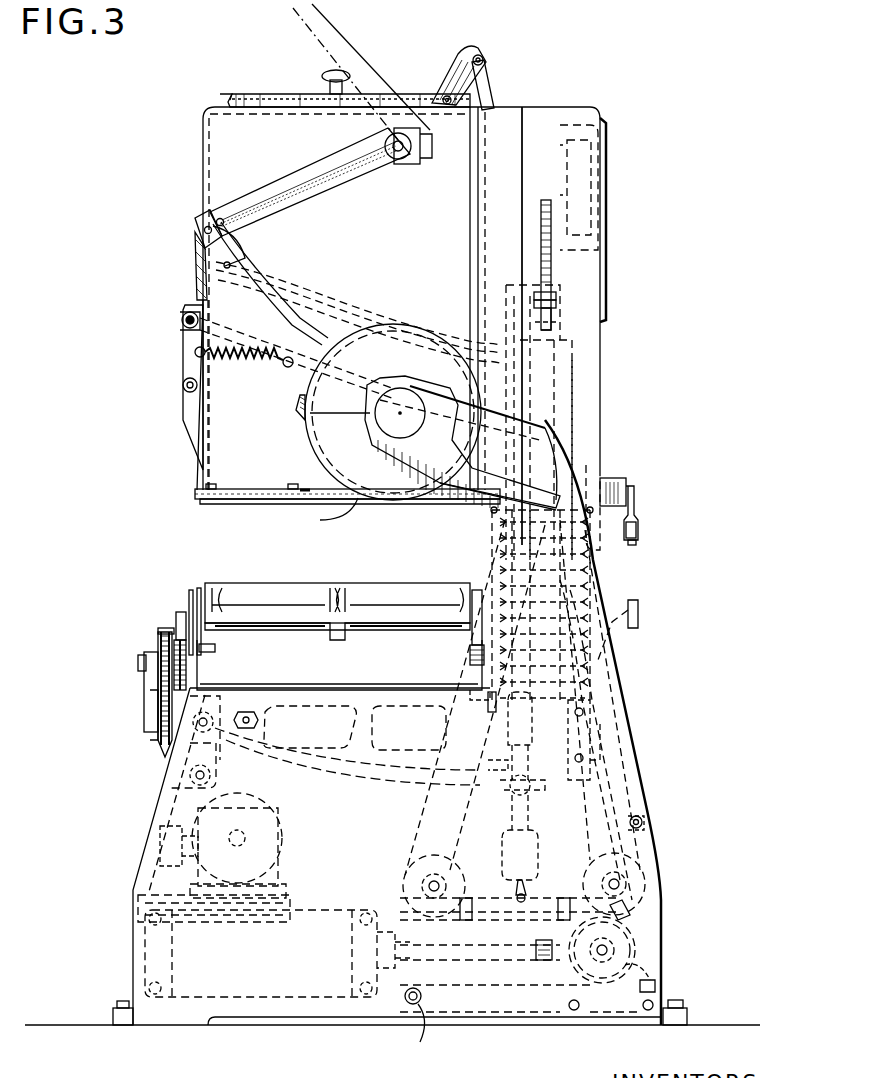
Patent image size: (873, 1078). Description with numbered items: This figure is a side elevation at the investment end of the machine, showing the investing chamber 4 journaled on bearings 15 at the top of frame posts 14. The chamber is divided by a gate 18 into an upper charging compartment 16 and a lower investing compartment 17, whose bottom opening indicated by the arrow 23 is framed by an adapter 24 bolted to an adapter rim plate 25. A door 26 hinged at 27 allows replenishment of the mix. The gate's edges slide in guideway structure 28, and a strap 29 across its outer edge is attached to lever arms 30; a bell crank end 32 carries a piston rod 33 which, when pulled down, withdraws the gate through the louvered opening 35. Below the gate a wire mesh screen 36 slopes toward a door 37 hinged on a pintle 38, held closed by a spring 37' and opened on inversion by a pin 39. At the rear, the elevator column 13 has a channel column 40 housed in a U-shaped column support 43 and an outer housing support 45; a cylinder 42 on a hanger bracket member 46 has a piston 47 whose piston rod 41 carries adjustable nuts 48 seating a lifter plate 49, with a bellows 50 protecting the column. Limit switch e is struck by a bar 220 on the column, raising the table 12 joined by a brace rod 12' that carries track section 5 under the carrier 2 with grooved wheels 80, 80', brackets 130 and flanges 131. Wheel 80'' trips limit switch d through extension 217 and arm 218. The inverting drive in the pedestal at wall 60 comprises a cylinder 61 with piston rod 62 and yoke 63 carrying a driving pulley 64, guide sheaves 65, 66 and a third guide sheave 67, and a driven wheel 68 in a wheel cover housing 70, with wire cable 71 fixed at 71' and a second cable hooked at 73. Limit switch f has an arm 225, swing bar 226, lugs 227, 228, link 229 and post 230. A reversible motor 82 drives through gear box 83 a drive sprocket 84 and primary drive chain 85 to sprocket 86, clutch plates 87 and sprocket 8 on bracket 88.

The investing chamber 4 is at (192, 104).
The door 26 is at (283, 92).
The bell crank end 32 is at (458, 52).
The piston rod 33 is at (494, 98).
The U-shaped column support 43 is at (508, 132).
The outer housing support 45 is at (542, 128).
The lever arm 30 is at (312, 170).
The hinge 27 is at (445, 110).
The strap 29 is at (195, 222).
The louvered opening 35 is at (197, 246).
The guideway structure 28 is at (247, 260).
The gate 18 is at (210, 292).
The upper charging compartment 16 is at (392, 266).
The wire mesh screen 36 is at (290, 312).
The channel column 40 is at (505, 307).
The adjustable nuts 48 is at (556, 300).
The lifter plate 49 is at (562, 289).
The piston rod 41 is at (556, 326).
The cylinder 42 is at (574, 365).
The pin 39 is at (180, 320).
The door 37 is at (168, 387).
The spring 37' is at (244, 370).
The pintle 38 is at (183, 387).
The lower investing compartment 17 is at (265, 430).
The bearings 15 is at (418, 383).
The driven wheel 68 is at (330, 460).
The piston 47 is at (596, 470).
The hanger bracket member 46 is at (600, 478).
The limit switch e is at (622, 486).
The adapter rim plate 25 is at (196, 492).
The wheel cover housing 70 is at (329, 511).
The frame posts 14 is at (476, 506).
The adapter 24 is at (212, 505).
The opening 23 is at (280, 514).
The elevator column 13 is at (482, 548).
The third guide sheave 67 is at (598, 562).
The bellows 50 is at (596, 598).
The grooved wheels 80 is at (190, 605).
The carrier 2 is at (282, 590).
The end plate 80' is at (463, 604).
The bar 220 is at (640, 616).
The brackets 130 is at (180, 610).
The sprocket 86 is at (158, 630).
The friction clutch plates 87 is at (144, 654).
The right angled flanges 131 is at (215, 648).
The sprocket 8 is at (188, 670).
The wheel 80'' is at (454, 652).
The track section 5 is at (212, 688).
The bracket 88 is at (150, 690).
The primary drive chain 85 is at (158, 710).
The lower extension 217 is at (488, 700).
The arm 218 is at (520, 700).
The limit switch d is at (535, 720).
The brace rod 12' is at (248, 744).
The table 12 is at (347, 769).
The reversible motor 82 is at (246, 806).
The drive sprocket 84 is at (160, 828).
The outer side wall 60 is at (382, 846).
The limit switch f is at (505, 845).
The guide sheave 66 is at (614, 858).
The gear box 83 is at (278, 876).
The guide sheave 65 is at (402, 884).
The arm 225 is at (532, 878).
The swing bar 226 is at (503, 898).
The lug 228 is at (580, 886).
The link 229 is at (600, 885).
The lug 227 is at (460, 918).
The post 230 is at (545, 935).
The driving pulley 64 is at (630, 950).
The piston rod 62 is at (470, 958).
The yoke 63 is at (555, 962).
The hook loop 73 is at (660, 984).
The wire cable 71 is at (441, 1000).
The cable anchor 71' is at (405, 1030).
The cylinder 61 is at (302, 990).